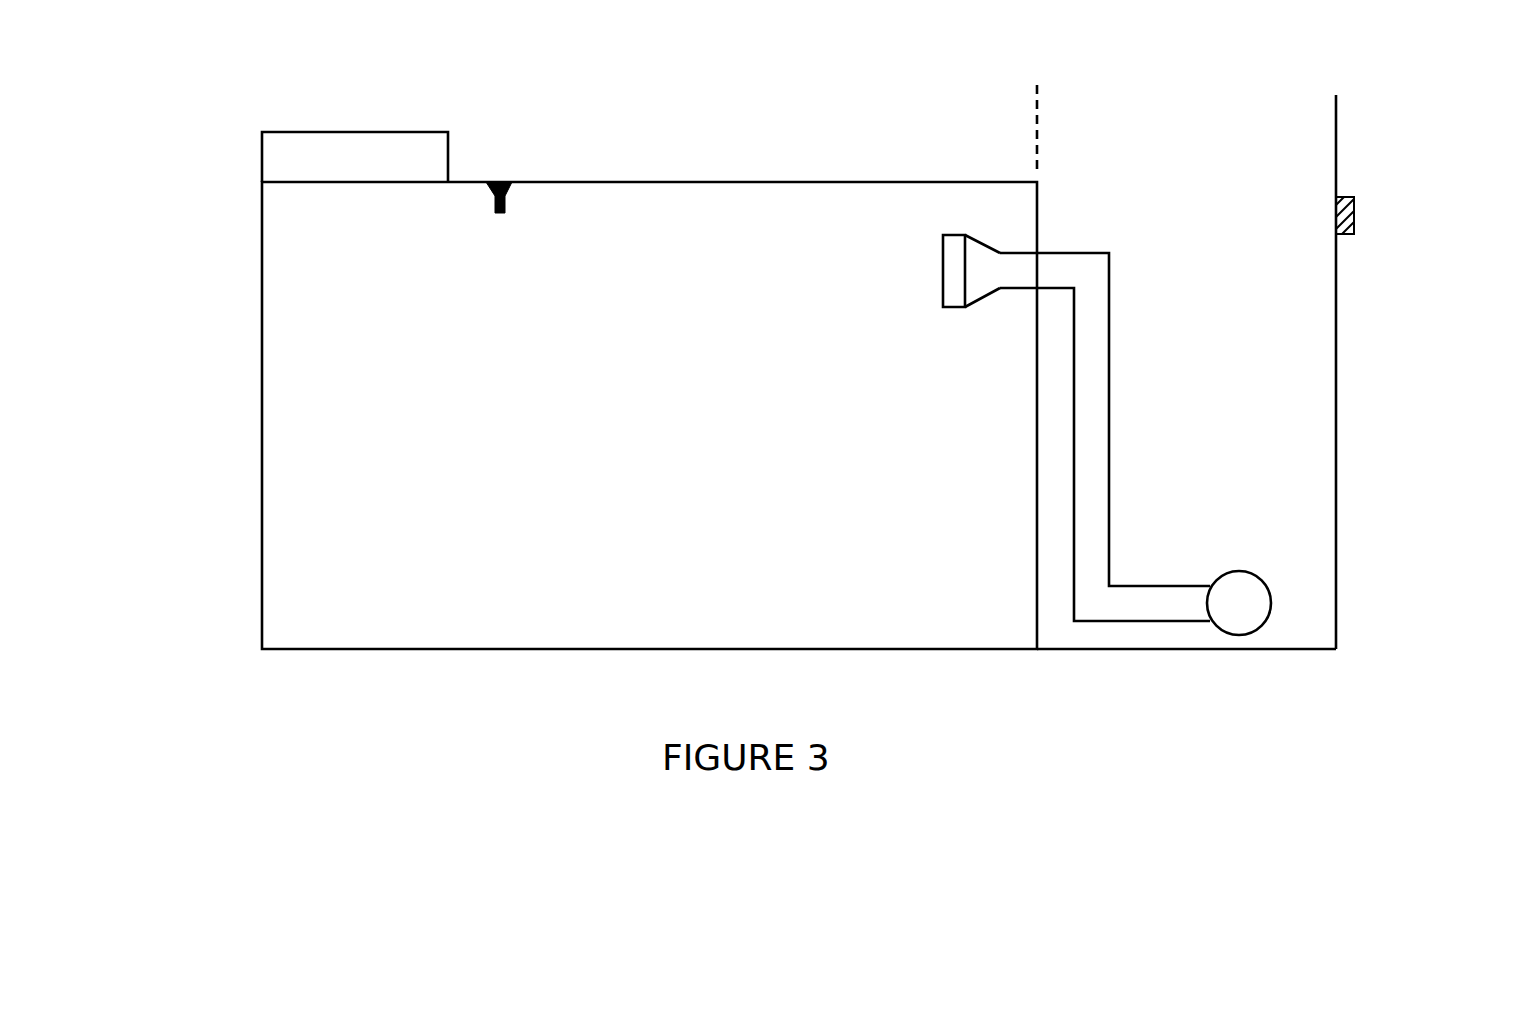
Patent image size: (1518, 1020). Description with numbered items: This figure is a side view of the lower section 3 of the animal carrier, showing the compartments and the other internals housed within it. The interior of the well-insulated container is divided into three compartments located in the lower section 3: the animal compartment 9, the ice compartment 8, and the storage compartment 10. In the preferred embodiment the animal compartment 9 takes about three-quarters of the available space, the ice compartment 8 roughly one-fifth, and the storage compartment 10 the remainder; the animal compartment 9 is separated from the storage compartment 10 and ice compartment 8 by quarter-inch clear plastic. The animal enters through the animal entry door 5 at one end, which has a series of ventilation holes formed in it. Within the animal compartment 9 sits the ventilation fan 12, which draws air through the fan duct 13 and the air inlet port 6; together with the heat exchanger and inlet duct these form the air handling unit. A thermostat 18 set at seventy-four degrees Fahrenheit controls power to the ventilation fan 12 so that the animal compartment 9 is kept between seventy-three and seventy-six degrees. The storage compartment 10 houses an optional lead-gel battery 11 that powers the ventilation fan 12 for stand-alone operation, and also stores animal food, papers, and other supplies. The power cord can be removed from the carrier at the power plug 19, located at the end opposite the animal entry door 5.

The lower section 3 is at (1336, 435).
The animal entry door 5 is at (248, 423).
The air inlet port 6 is at (1253, 620).
The ice compartment 8 is at (1265, 345).
The animal compartment 9 is at (525, 598).
The storage compartment 10 is at (728, 115).
The battery 11 is at (350, 147).
The ventilation fan 12 is at (952, 257).
The fan duct 13 is at (1109, 283).
The thermostat 18 is at (503, 182).
The power plug 19 is at (1355, 214).